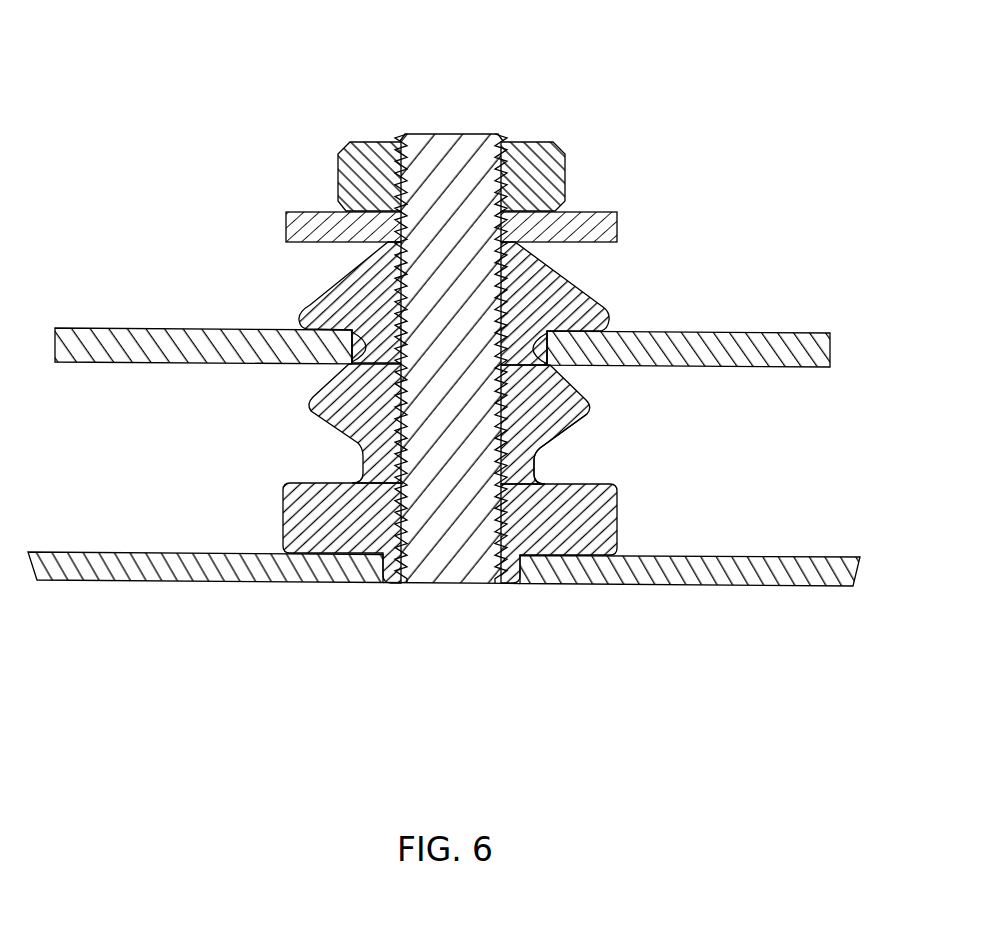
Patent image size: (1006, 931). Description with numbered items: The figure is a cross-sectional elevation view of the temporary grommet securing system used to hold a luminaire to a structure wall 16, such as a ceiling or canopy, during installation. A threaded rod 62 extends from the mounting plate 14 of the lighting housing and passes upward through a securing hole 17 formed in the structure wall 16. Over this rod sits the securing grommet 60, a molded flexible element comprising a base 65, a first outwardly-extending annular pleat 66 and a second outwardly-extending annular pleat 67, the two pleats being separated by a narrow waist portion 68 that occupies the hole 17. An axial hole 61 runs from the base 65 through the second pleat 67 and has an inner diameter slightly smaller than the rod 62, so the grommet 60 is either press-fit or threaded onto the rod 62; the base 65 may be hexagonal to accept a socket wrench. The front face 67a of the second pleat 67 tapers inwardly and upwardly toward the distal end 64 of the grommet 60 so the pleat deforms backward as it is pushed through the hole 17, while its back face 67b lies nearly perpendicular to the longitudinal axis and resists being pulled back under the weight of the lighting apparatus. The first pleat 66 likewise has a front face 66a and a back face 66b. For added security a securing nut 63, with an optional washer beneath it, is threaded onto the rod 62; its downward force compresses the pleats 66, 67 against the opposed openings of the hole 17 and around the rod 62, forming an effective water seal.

The mounting plate 14 is at (760, 557).
The structure wall 16 is at (780, 333).
The securing hole 17 is at (355, 348).
The securing grommet 60 is at (220, 167).
The axial hole 61 is at (403, 150).
The threaded rod 62 is at (477, 197).
The securing nut 63 is at (540, 167).
The distal end 64 is at (505, 247).
The base 65 is at (586, 502).
The first outwardly-extending annular pleat 66 is at (399, 424).
The front face of the first pleat 66a is at (580, 381).
The back face of the first pleat 66b is at (556, 432).
The second outwardly-extending annular pleat 67 is at (420, 318).
The front face of the second pleat 67a is at (597, 286).
The back face of the second pleat 67b is at (608, 336).
The waist portion 68 is at (340, 366).